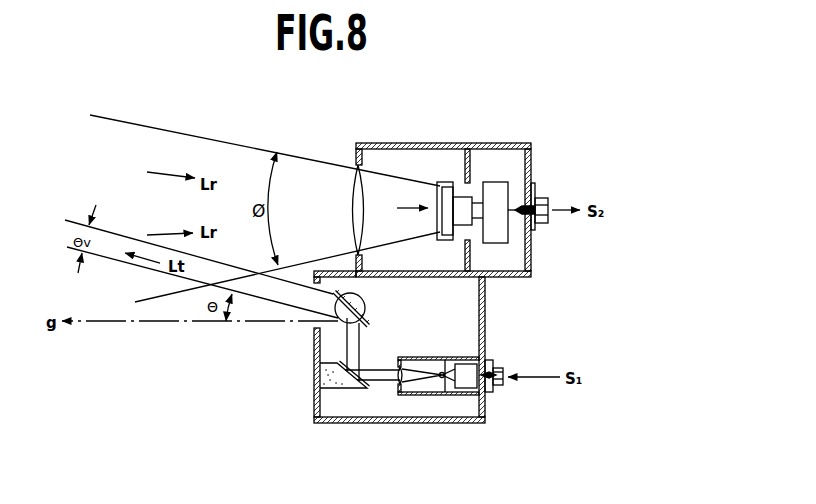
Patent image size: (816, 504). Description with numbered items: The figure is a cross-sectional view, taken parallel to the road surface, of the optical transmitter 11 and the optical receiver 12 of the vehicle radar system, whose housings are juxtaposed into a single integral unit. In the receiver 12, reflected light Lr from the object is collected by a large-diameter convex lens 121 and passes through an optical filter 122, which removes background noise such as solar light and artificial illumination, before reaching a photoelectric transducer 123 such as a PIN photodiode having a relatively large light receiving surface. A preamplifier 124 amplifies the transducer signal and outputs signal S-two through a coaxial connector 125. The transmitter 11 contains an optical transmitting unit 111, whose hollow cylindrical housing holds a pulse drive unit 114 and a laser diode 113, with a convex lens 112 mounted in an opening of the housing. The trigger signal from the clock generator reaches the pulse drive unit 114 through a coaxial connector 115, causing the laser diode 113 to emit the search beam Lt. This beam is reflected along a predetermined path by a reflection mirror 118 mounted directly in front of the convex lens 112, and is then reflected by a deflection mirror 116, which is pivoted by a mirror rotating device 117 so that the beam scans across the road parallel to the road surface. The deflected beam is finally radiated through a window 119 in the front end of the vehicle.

The optical transmitter 11 is at (402, 426).
The optical receiver 12 is at (453, 142).
The optical transmitting unit 111 is at (446, 353).
The convex lens 112 is at (373, 349).
The laser diode 113 is at (441, 386).
The pulse drive unit 114 is at (469, 389).
The coaxial connector 115 is at (494, 362).
The deflection mirror 116 is at (347, 292).
The mirror rotating device 117 is at (366, 310).
The reflection mirror 118 is at (354, 389).
The window 119 is at (309, 327).
The large-diameter convex lens 121 is at (352, 187).
The optical filter 122 is at (437, 198).
The photoelectric transducer 123 is at (455, 232).
The preamplifier 124 is at (500, 246).
The coaxial connector 125 is at (539, 197).